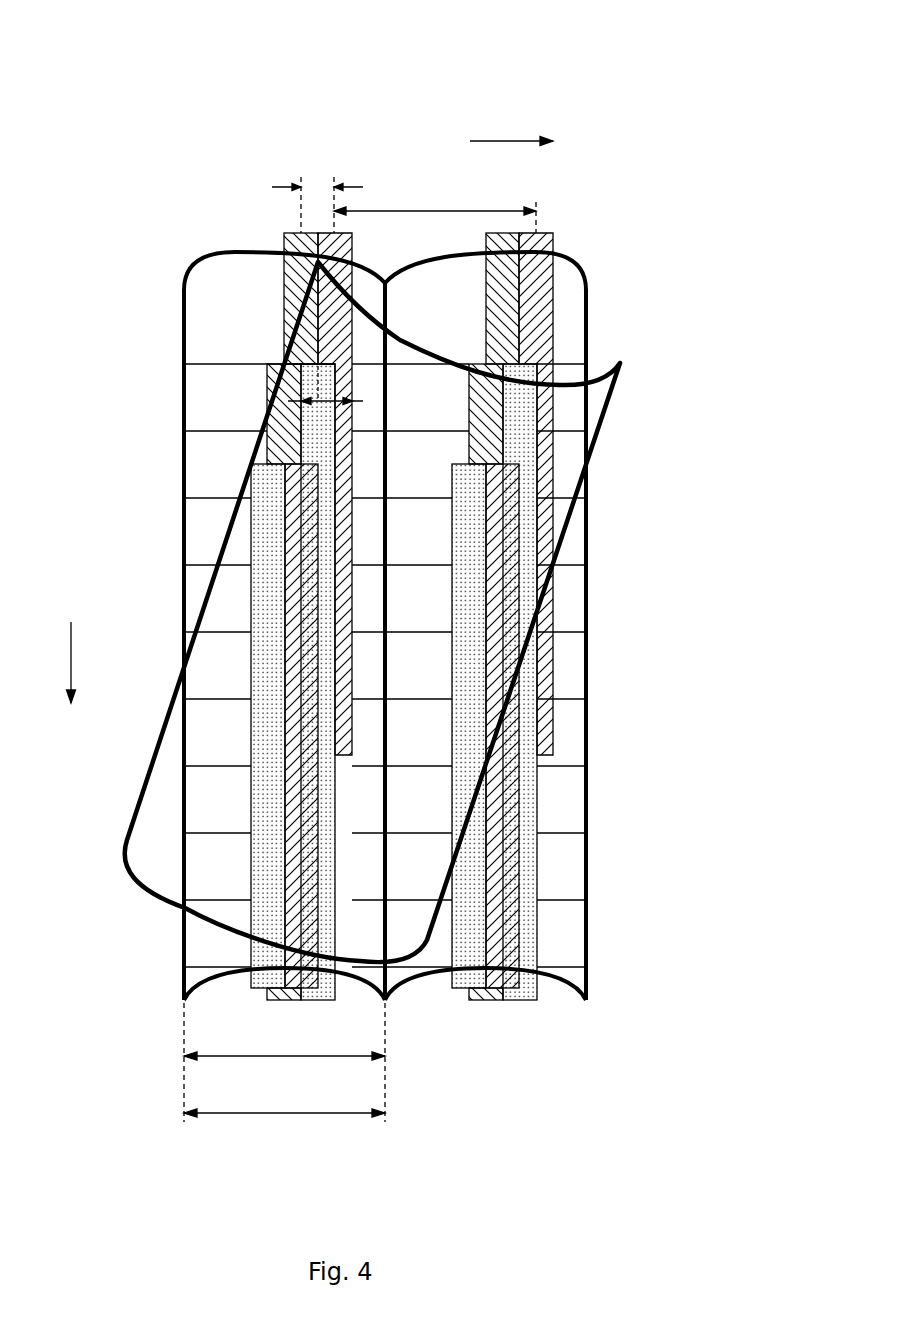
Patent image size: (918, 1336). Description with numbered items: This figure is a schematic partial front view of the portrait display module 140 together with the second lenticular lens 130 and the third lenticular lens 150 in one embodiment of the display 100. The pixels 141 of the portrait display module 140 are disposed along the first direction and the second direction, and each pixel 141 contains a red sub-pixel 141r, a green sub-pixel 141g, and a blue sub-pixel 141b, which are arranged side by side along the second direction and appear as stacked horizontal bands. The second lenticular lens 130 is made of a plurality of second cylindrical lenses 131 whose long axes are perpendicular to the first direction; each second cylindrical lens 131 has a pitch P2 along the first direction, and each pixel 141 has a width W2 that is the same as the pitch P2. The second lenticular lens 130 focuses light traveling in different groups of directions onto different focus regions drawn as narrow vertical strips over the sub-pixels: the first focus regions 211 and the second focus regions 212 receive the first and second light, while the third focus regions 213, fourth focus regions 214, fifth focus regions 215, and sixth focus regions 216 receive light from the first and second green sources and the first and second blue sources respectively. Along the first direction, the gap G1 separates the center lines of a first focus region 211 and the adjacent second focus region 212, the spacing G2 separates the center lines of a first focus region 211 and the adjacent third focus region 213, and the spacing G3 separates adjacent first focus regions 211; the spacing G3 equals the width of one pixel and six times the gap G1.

The display device 100 is at (74, 35).
The second lenticular lens 130 is at (570, 264).
The second cylindrical lens 131 is at (230, 255).
The portrait display module 140 is at (590, 510).
The pixel 141 is at (314, 665).
The red sub-pixel 141r is at (193, 424).
The green sub-pixel 141g is at (192, 478).
The blue sub-pixel 141b is at (342, 541).
The third lenticular lens 150 is at (560, 540).
The first focus region 211 is at (288, 328).
The second focus region 212 is at (288, 350).
The third focus region 213 is at (281, 390).
The fourth focus region 214 is at (284, 412).
The fifth focus region 215 is at (293, 574).
The sixth focus region 216 is at (263, 609).
The gap G1 is at (317, 190).
The spacing G2 is at (330, 402).
The spacing G3 is at (435, 208).
The width W2 is at (284, 1062).
The pitch P2 is at (284, 1127).